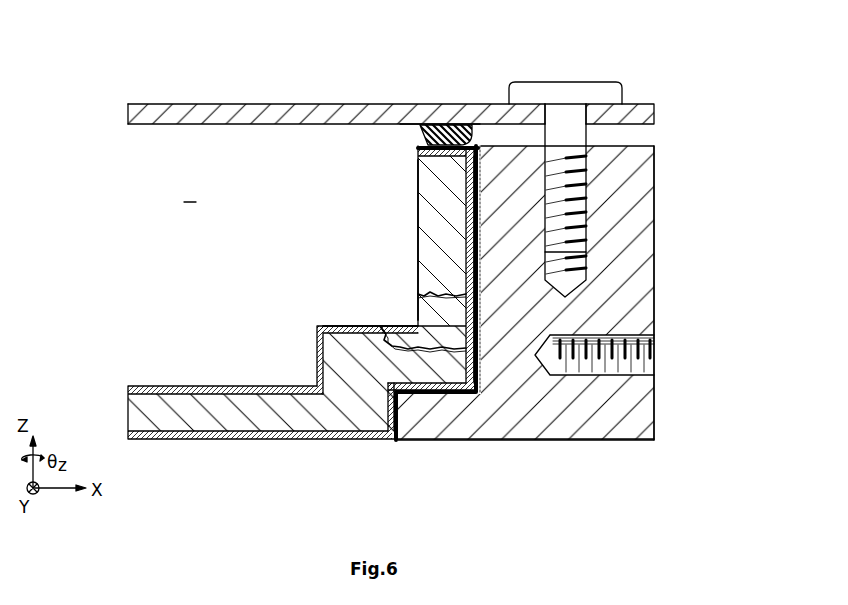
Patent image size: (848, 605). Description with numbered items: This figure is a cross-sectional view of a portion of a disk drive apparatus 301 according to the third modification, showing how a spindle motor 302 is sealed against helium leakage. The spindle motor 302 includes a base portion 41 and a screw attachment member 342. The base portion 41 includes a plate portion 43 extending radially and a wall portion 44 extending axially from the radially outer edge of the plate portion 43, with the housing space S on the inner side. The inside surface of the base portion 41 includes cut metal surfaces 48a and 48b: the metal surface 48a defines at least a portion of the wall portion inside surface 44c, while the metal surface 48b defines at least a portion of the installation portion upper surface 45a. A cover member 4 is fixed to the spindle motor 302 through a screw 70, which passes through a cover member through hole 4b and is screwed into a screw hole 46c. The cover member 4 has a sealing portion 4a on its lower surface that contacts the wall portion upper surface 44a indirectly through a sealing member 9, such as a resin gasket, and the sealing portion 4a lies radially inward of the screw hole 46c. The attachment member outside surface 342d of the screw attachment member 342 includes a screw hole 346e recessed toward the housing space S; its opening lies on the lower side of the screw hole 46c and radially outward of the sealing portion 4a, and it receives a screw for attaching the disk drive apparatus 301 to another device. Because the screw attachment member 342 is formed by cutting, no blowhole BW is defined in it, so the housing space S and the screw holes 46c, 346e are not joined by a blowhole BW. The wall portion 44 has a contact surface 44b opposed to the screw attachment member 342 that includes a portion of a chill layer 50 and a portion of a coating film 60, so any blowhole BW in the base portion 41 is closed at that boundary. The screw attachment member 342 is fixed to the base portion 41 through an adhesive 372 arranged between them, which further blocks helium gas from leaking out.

The disk drive apparatus 301 is at (727, 58).
The spindle motor 302 is at (687, 151).
The cover member 4 is at (237, 108).
The sealing portion 4a is at (418, 130).
The cover member through hole 4b is at (548, 118).
The sealing member 9 is at (442, 132).
The base portion 41 is at (331, 441).
The plate portion 43 is at (177, 424).
The wall portion 44 is at (430, 188).
The wall portion upper surface 44a is at (456, 132).
The contact surface 44b is at (490, 247).
The wall portion inside surface 44c is at (356, 240).
The installation portion upper surface 45a is at (337, 289).
The screw hole 46c is at (580, 266).
The metal surface 48a is at (412, 222).
The metal surface 48b is at (340, 326).
The chill layer 50 is at (471, 166).
The coating film 60 is at (415, 410).
The screw 70 is at (579, 92).
The screw attachment member 342 is at (655, 423).
The attachment member outside surface 342d is at (656, 208).
The screw hole 346e is at (630, 362).
The adhesive 372 is at (438, 393).
The blowhole BW is at (385, 345).
The housing space S is at (190, 193).